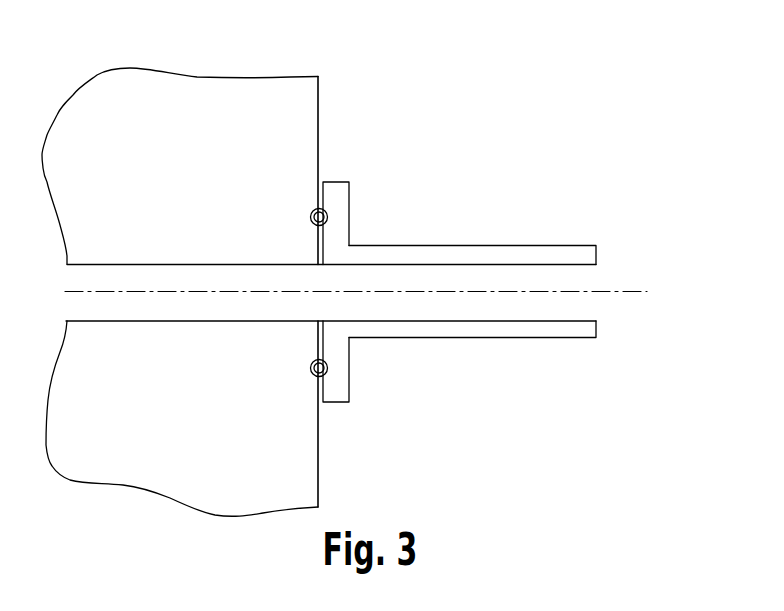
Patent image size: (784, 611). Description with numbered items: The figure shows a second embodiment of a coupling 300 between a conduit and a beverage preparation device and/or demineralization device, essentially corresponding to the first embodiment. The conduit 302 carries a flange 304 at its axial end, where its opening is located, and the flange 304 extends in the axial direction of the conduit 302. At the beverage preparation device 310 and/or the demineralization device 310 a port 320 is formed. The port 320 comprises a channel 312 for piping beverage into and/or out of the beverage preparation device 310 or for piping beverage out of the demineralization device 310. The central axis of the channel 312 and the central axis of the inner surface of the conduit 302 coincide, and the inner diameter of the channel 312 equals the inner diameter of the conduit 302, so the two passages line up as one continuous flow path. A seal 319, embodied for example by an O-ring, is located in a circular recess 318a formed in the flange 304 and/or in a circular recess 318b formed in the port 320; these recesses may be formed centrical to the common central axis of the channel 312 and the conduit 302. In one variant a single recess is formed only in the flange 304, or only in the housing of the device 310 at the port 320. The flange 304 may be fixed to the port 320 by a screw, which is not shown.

The coupling 300 is at (592, 66).
The conduit 302 is at (490, 256).
The flange 304 is at (338, 218).
The beverage preparation device and/or demineralization device 310 is at (306, 463).
The channel 312 is at (148, 273).
The circular recess 318a is at (338, 206).
The circular recess 318b is at (302, 196).
The seal 319 is at (310, 216).
The port 320 is at (339, 160).